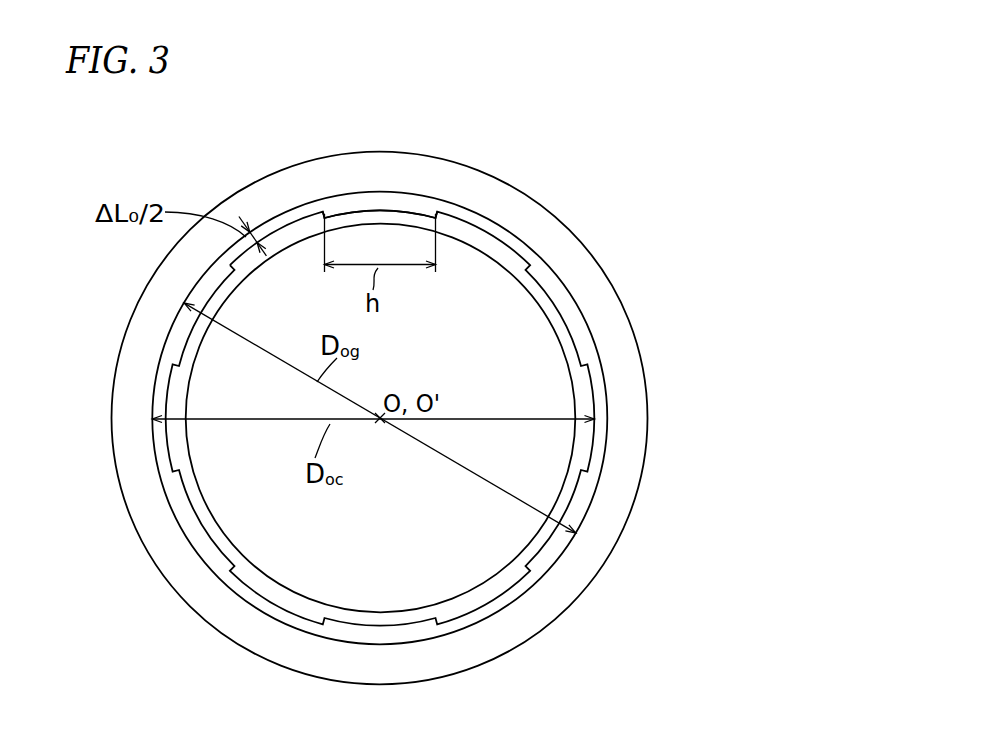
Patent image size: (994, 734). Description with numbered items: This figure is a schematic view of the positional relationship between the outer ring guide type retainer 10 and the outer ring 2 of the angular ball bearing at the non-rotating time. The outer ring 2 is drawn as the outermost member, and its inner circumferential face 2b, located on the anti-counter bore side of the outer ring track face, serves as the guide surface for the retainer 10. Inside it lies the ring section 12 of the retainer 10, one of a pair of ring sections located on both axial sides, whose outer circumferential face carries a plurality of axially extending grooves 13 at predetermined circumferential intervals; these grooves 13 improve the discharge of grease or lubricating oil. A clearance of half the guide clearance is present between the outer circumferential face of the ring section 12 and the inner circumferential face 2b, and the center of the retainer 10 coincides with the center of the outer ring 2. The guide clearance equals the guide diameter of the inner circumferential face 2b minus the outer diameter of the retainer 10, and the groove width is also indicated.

The outer ring 2 is at (590, 282).
The inner circumferential face 2b is at (503, 228).
The retainer 10 is at (227, 535).
The ring section 12 is at (487, 243).
The groove 13 is at (390, 209).